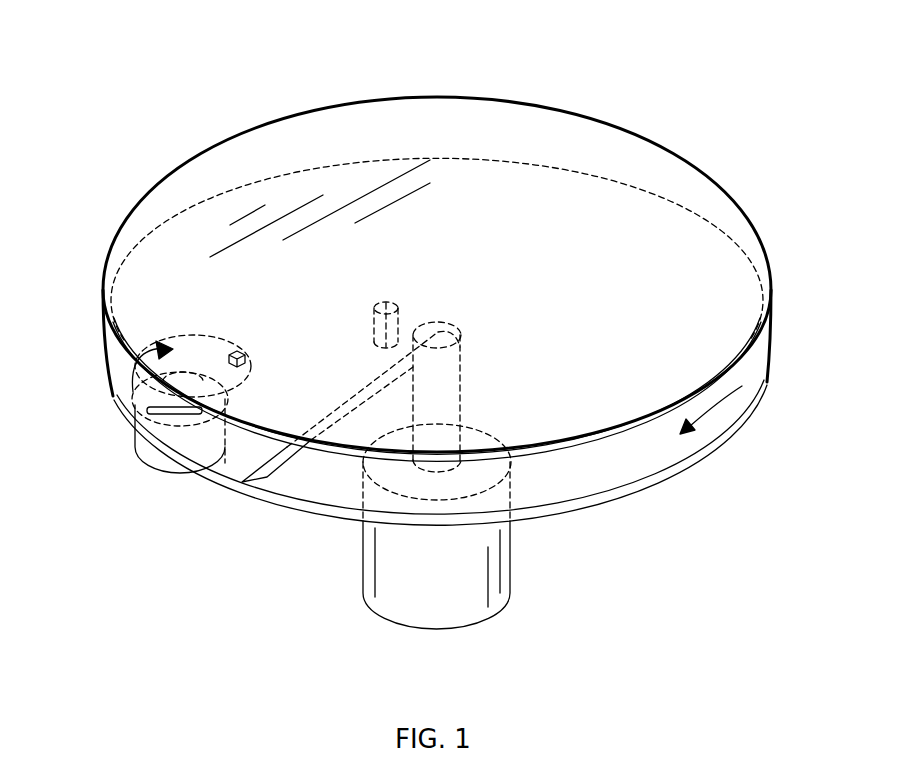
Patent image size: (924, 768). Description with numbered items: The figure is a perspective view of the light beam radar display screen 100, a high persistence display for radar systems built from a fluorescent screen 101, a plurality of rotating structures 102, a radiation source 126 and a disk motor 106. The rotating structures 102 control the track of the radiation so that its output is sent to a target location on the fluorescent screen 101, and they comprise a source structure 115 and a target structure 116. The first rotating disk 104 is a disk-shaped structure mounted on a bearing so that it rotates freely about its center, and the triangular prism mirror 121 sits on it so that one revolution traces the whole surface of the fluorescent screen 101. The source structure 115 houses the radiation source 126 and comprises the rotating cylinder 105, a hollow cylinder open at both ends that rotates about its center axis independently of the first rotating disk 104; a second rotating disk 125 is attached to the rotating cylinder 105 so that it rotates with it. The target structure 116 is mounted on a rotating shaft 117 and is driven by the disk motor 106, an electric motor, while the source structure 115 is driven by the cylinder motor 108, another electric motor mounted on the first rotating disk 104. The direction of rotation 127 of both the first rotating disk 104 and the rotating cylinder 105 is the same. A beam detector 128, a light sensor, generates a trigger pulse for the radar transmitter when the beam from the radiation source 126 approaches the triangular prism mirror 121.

The light beam radar display screen 100 is at (104, 47).
The fluorescent screen 101 is at (492, 99).
The rotating structures 102 is at (429, 426).
The first rotating disk 104 is at (688, 463).
The rotating cylinder 105 is at (197, 383).
The disk motor 106 is at (493, 560).
The cylinder motor 108 is at (168, 467).
The source structure 115 is at (598, 497).
The target structure 116 is at (117, 400).
The rotating shaft 117 is at (450, 396).
The triangular prism mirror 121 is at (355, 393).
The second rotating disk 125 is at (248, 392).
The radiation source 126 is at (242, 355).
The direction of rotation 127 is at (148, 350).
The beam detector 128 is at (398, 318).